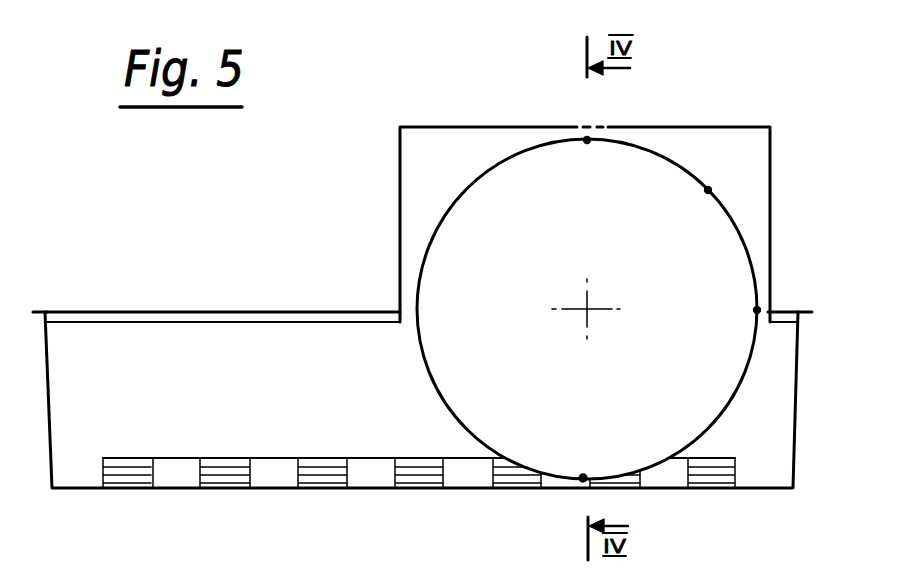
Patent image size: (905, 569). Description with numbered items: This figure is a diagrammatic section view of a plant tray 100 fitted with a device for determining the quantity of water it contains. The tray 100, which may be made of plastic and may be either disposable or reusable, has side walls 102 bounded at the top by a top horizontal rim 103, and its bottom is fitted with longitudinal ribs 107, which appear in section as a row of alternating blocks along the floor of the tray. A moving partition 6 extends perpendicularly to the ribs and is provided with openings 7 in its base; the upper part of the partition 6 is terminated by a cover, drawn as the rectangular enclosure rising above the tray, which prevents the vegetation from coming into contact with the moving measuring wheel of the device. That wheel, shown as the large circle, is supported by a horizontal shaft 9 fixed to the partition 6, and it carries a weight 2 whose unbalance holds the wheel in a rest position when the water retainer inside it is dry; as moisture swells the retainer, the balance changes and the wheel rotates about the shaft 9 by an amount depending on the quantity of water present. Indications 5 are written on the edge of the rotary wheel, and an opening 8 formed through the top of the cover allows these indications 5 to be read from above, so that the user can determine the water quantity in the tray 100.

The weight 2 is at (581, 476).
The indications 5 is at (758, 309).
The moving partition 6 is at (421, 181).
The openings 7 is at (174, 480).
The opening 8 is at (590, 122).
The horizontal shaft 9 is at (583, 306).
The plant tray 100 is at (90, 491).
The side walls 102 is at (152, 310).
The top horizontal rim 103 is at (40, 310).
The longitudinal ribs 107 is at (412, 490).